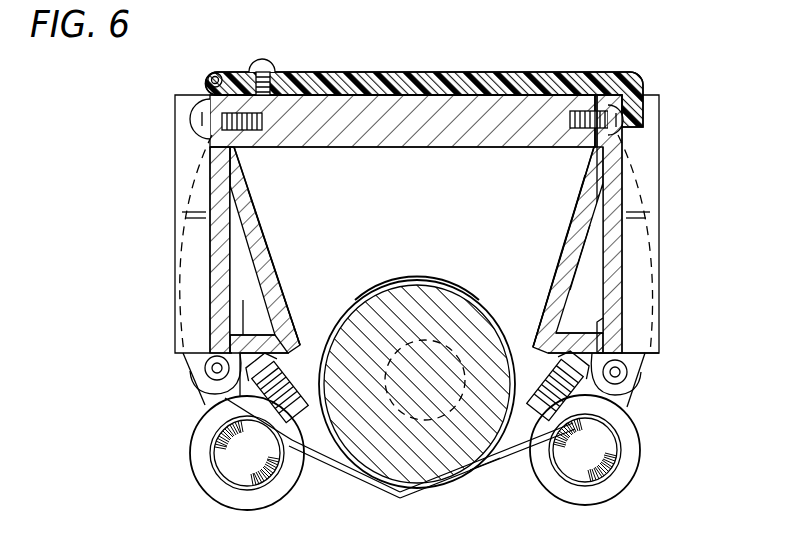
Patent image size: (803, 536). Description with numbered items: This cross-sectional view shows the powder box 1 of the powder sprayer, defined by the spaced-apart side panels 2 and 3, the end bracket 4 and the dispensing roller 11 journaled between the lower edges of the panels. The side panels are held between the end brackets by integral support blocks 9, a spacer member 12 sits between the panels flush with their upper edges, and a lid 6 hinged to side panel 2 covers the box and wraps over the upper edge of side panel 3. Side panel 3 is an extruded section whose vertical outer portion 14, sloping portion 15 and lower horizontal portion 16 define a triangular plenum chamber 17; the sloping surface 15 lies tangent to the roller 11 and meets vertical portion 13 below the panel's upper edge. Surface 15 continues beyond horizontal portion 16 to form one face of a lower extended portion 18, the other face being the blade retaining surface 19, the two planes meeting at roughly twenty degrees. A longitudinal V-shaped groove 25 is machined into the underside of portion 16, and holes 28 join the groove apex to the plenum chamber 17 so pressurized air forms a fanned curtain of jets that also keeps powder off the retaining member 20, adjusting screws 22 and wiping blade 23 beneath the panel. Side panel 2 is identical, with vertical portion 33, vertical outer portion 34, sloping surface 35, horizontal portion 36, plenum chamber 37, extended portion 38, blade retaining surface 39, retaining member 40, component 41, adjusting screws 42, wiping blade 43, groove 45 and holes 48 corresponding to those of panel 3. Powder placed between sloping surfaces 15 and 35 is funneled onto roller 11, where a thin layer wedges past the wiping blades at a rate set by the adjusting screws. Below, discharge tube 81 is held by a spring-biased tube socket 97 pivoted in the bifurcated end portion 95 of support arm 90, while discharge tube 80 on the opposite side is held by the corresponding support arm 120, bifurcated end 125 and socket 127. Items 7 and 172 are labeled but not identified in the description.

The powder box 1 is at (661, 78).
The side panel 2 is at (262, 184).
The side panel 3 is at (578, 174).
The end bracket 4 is at (427, 207).
The lid 6 is at (462, 76).
The hinge pin 7 is at (212, 73).
The support block 9 is at (176, 111).
The dispensing roller 11 is at (396, 492).
The spacer member 12 is at (396, 106).
The vertical portion 13 is at (618, 300).
The vertical outer portion 14 is at (581, 214).
The sloping portion 15 is at (572, 231).
The lower horizontal portion 16 is at (580, 282).
The plenum chamber 17 is at (598, 274).
The lower extended portion 18 is at (548, 345).
The blade retaining surface 19 is at (580, 338).
The retaining member 20 is at (545, 454).
The adjusting screws 22 is at (598, 362).
The wiping blade 23 is at (506, 463).
The V-shaped groove 25 is at (611, 352).
The holes 28 is at (603, 326).
The vertical portion 33 is at (215, 249).
The vertical outer portion 34 is at (250, 214).
The sloping surface 35 is at (250, 247).
The lower horizontal portion 36 is at (282, 298).
The plenum chamber 37 is at (230, 292).
The lower extended portion 38 is at (228, 398).
The blade retaining surface 39 is at (264, 353).
The retaining member 40 is at (272, 426).
The belt entry segment 41 is at (325, 445).
The adjusting screws 42 is at (300, 343).
The wiping blade 43 is at (335, 462).
The V-shaped groove 45 is at (244, 333).
The holes 48 is at (235, 347).
The discharge tube 80 is at (252, 483).
The discharge tube 81 is at (567, 468).
The support arm 90 is at (668, 190).
The bifurcated end portion 95 is at (632, 375).
The spring biased tube socket 97 is at (641, 445).
The support arm 120 is at (177, 186).
The bifurcated end portion 125 is at (200, 374).
The socket 127 is at (204, 490).
The drum rim 172 is at (446, 270).